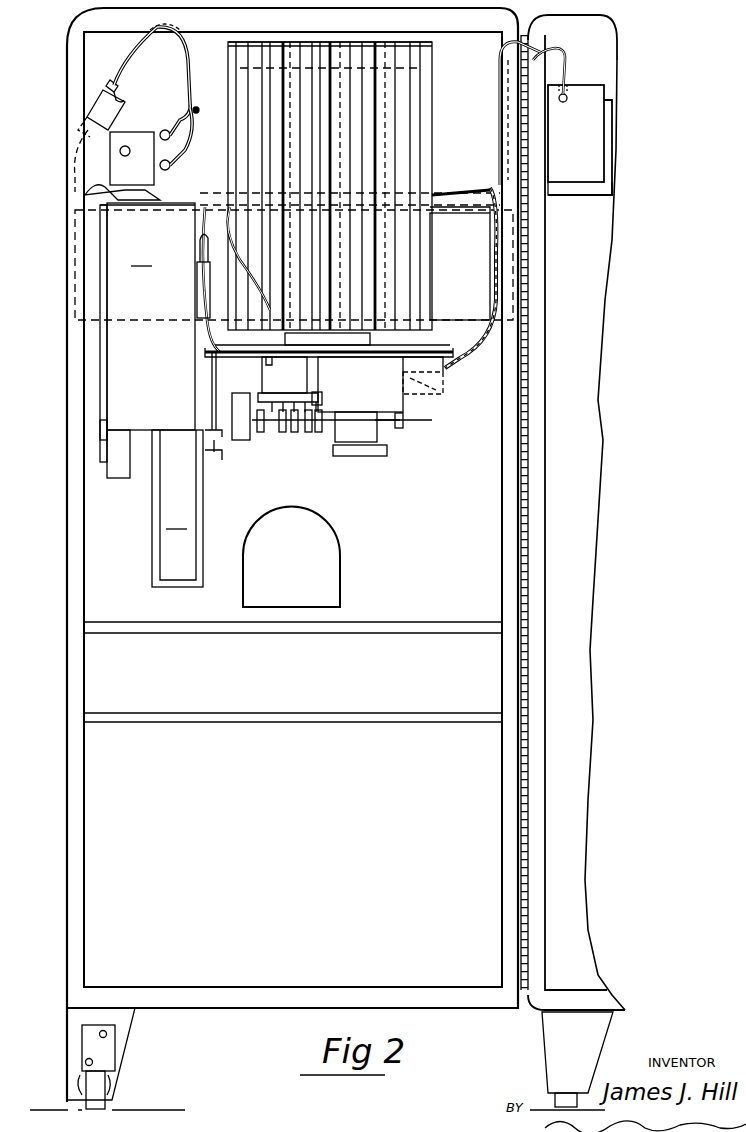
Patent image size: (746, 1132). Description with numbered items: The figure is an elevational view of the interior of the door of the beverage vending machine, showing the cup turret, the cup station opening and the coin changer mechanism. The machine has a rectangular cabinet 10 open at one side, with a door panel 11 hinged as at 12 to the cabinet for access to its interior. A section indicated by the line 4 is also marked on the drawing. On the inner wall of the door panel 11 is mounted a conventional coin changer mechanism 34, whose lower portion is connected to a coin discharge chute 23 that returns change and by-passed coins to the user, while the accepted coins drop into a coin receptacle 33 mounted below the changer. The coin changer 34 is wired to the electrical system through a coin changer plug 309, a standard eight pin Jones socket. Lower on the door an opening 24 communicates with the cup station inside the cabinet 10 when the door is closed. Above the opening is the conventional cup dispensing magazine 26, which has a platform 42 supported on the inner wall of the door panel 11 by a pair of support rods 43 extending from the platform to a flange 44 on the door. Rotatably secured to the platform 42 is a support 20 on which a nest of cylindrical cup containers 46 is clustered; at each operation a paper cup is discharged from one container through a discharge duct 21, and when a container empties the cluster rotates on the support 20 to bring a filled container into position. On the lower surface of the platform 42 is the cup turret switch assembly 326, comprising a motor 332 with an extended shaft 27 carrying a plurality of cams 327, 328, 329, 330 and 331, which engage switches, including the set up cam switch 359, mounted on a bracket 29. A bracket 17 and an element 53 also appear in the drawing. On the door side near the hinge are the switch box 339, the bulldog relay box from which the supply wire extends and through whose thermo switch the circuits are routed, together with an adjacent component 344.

The section line 4- 4 is at (120, 33).
The cabinet 10 is at (603, 552).
The door panel 11 is at (70, 793).
The hinge 12 is at (530, 38).
The bracket 17 is at (197, 297).
The support 20 is at (370, 340).
The discharge duct 21 is at (385, 447).
The coin discharge chute 23 is at (124, 458).
The opening 24 is at (341, 552).
The cup dispensing magazine 26 is at (432, 128).
The extended shaft 27 is at (418, 424).
The bracket 29 is at (266, 369).
The coin receptacle 33 is at (177, 508).
The coin changer mechanism 34 is at (147, 321).
The platform 42 is at (236, 356).
The support rods 43 is at (438, 312).
The flange 44 is at (436, 214).
The cylindrical cup containers 46 is at (432, 66).
The switch bank 53 is at (280, 398).
The coin changer plug 309 is at (110, 116).
The cup turret switch assembly 326 is at (446, 392).
The cam 327 is at (319, 432).
The cam 328 is at (308, 432).
The cam 329 is at (294, 432).
The cam 330 is at (282, 432).
The cam 331 is at (261, 432).
The motor 332 is at (233, 448).
The switch box 339 is at (573, 190).
The door switch box 344 is at (597, 163).
The set up cam switch 359 is at (322, 399).